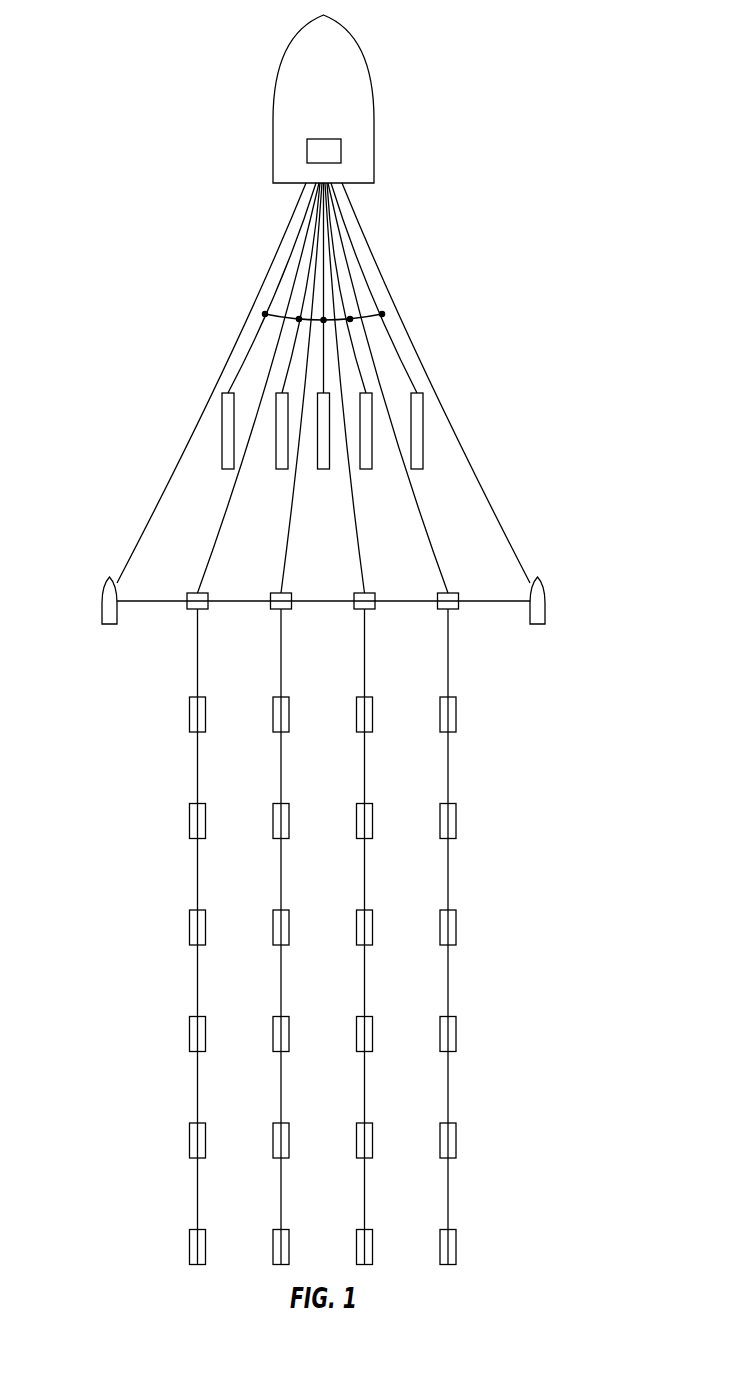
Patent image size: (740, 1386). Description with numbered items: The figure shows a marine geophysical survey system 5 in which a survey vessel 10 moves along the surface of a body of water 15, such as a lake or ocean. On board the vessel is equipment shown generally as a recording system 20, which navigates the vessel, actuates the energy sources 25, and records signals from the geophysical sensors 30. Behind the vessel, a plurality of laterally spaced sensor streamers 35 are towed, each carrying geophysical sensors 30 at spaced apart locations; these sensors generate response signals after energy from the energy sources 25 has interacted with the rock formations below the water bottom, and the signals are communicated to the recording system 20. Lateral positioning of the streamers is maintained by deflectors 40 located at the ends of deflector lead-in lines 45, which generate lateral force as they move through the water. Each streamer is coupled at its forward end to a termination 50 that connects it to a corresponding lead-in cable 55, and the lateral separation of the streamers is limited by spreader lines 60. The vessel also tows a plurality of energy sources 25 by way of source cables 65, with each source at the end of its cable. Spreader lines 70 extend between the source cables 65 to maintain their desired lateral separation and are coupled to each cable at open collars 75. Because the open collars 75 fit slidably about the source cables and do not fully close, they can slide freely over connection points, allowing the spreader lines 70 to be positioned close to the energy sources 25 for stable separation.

The marine geophysical survey system 5 is at (580, 133).
The survey vessel 10 is at (372, 75).
The body of water 15 is at (600, 325).
The recording system 20 is at (341, 151).
The energy sources 25 is at (222, 430).
The geophysical sensors 30 is at (190, 714).
The sensor streamers 35 is at (488, 650).
The deflectors 40 is at (102, 598).
The deflector lead-in lines 45 is at (167, 497).
The terminations 50 is at (187, 593).
The lead-in cables 55 is at (457, 541).
The spreader lines 60 is at (167, 604).
The source cables 65 is at (305, 287).
The spreader lines 70 is at (366, 322).
The open collars 75 is at (322, 322).